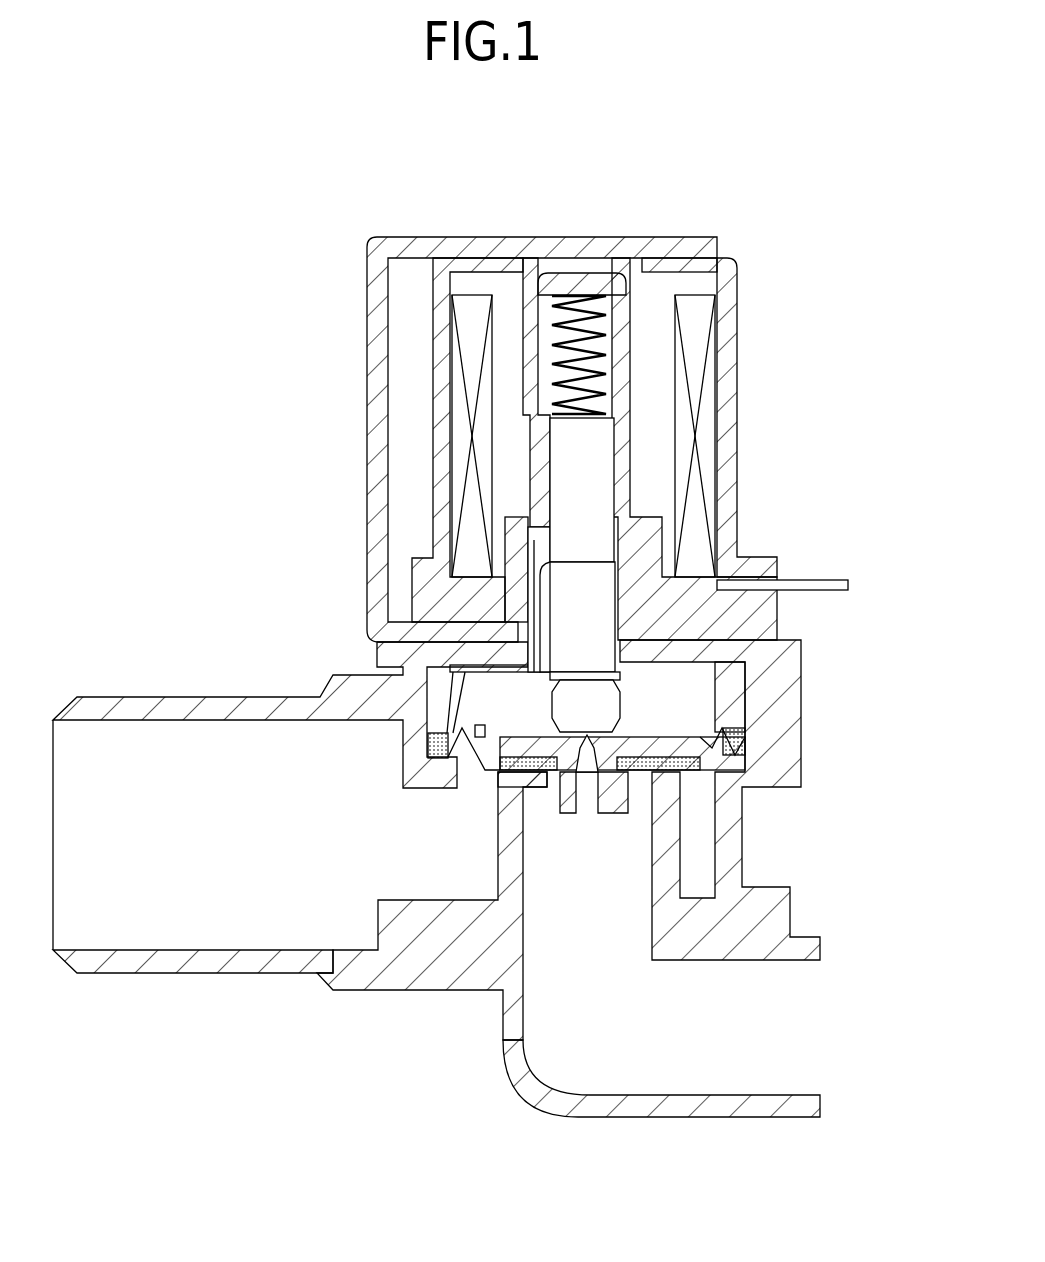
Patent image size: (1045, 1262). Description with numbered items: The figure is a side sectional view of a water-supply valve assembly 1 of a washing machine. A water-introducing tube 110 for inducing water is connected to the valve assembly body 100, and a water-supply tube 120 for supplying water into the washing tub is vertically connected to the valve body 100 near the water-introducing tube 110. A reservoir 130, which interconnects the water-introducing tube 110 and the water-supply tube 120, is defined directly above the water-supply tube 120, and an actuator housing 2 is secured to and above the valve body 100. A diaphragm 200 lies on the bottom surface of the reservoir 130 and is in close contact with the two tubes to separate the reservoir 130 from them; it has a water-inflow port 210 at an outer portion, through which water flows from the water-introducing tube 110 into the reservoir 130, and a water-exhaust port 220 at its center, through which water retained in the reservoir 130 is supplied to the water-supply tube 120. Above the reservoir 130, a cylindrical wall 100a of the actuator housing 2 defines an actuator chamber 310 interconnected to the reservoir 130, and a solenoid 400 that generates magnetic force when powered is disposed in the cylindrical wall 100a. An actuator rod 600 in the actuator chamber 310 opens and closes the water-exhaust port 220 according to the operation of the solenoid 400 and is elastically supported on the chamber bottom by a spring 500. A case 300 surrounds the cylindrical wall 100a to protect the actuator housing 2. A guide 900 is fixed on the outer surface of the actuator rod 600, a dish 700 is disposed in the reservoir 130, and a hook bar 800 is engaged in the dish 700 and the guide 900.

The water-supply valve assembly 1 is at (179, 193).
The actuator housing 2 is at (348, 419).
The valve assembly body 100 is at (783, 766).
The cylindrical wall 100a is at (568, 283).
The water-introducing tube 110 is at (183, 930).
The water-supply tube 120 is at (795, 1035).
The reservoir 130 is at (745, 693).
The diaphragm 200 is at (723, 725).
The water-inflow port 210 is at (490, 772).
The water-exhaust port 220 is at (590, 797).
The case 300 is at (367, 477).
The actuator chamber 310 is at (610, 375).
The solenoid 400 is at (703, 318).
The spring 500 is at (593, 295).
The actuator rod 600 is at (612, 493).
The dish 700 is at (800, 657).
The hook bar 800 is at (535, 585).
The guide 900 is at (558, 630).